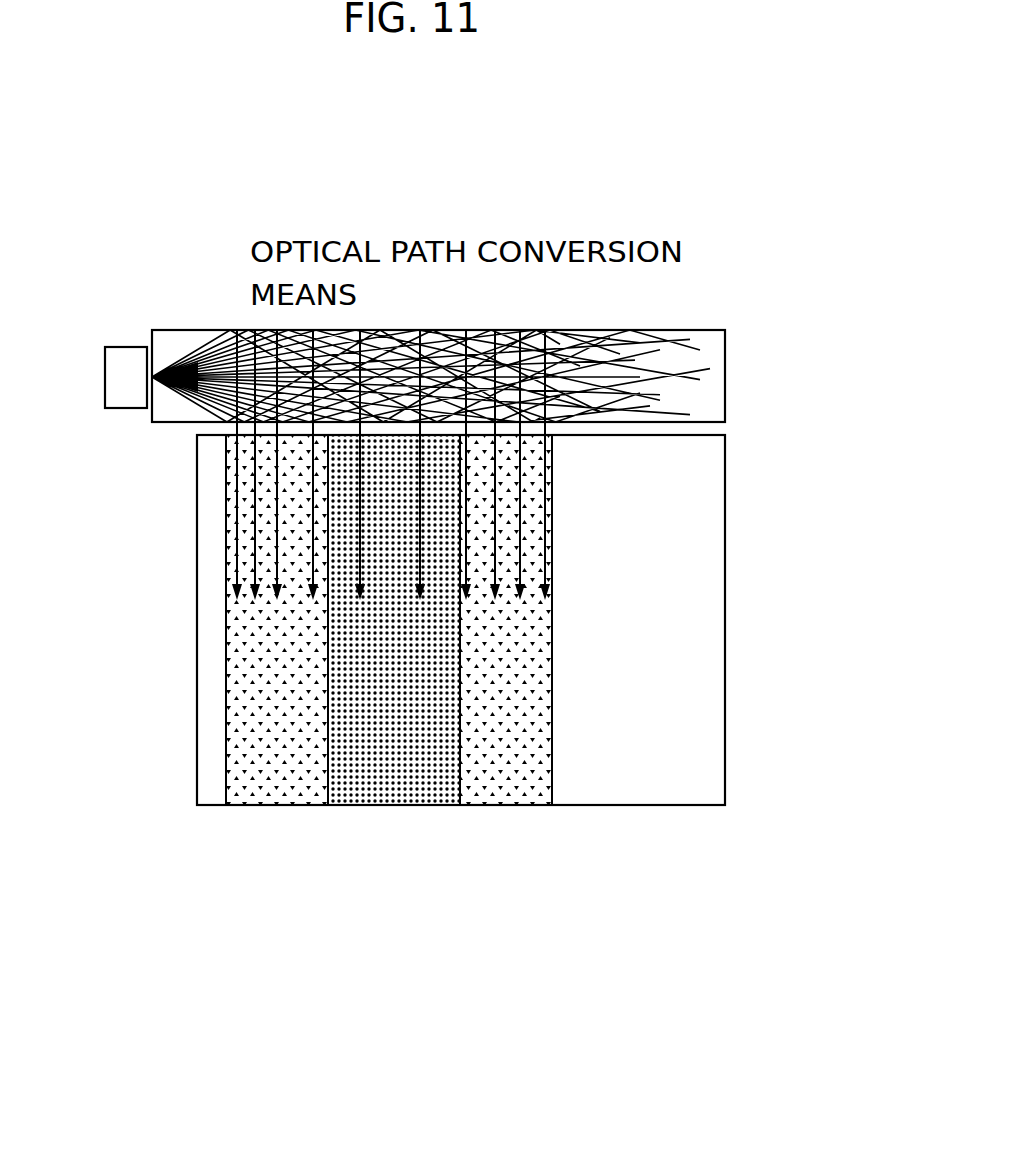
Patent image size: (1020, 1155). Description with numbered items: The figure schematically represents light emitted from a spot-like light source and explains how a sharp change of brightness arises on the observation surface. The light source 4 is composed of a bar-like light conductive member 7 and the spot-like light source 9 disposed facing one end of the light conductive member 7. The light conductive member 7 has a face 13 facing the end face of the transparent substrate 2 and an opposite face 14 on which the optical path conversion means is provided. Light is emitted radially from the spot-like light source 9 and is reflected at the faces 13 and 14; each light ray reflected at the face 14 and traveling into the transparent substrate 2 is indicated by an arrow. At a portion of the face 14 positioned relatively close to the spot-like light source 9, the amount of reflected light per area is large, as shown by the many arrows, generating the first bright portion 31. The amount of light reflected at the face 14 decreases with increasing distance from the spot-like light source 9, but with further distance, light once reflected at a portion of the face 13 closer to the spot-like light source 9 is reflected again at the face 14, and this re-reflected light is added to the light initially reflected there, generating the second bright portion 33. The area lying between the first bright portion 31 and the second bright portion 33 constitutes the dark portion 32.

The transparent substrate 2 is at (705, 668).
The light source 4 is at (198, 188).
The light conductive member 7 is at (170, 343).
The spot-like light source 9 is at (120, 348).
The face 13 is at (668, 422).
The face 14 is at (693, 329).
The first bright portion 31 is at (278, 855).
The dark portion 32 is at (387, 858).
The second bright portion 33 is at (498, 852).